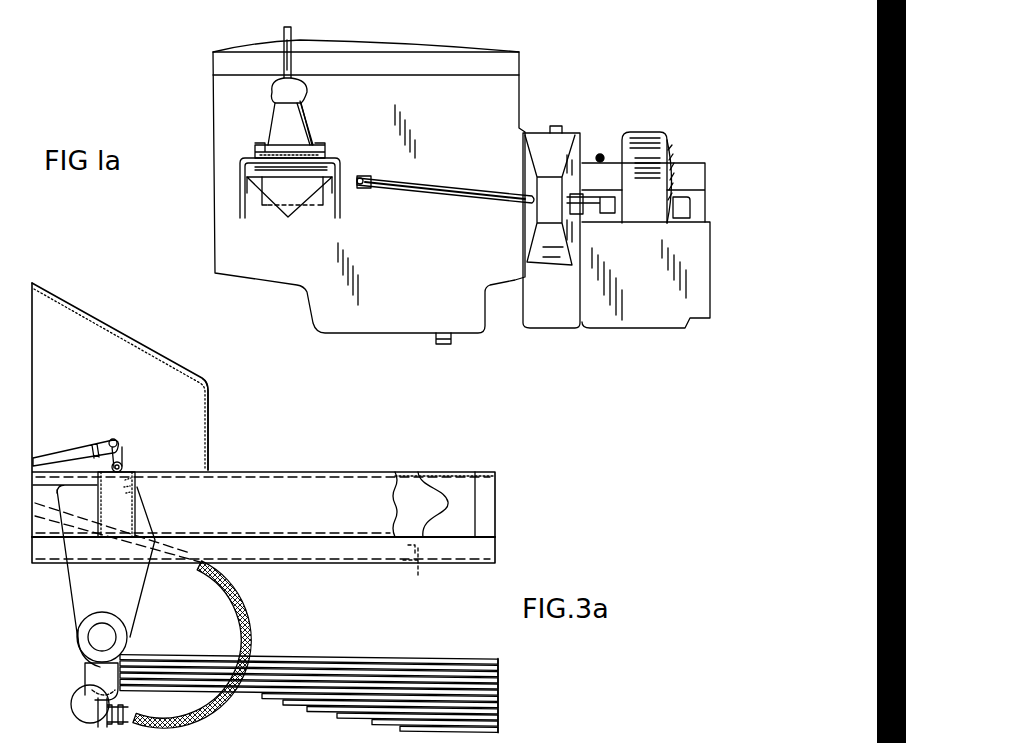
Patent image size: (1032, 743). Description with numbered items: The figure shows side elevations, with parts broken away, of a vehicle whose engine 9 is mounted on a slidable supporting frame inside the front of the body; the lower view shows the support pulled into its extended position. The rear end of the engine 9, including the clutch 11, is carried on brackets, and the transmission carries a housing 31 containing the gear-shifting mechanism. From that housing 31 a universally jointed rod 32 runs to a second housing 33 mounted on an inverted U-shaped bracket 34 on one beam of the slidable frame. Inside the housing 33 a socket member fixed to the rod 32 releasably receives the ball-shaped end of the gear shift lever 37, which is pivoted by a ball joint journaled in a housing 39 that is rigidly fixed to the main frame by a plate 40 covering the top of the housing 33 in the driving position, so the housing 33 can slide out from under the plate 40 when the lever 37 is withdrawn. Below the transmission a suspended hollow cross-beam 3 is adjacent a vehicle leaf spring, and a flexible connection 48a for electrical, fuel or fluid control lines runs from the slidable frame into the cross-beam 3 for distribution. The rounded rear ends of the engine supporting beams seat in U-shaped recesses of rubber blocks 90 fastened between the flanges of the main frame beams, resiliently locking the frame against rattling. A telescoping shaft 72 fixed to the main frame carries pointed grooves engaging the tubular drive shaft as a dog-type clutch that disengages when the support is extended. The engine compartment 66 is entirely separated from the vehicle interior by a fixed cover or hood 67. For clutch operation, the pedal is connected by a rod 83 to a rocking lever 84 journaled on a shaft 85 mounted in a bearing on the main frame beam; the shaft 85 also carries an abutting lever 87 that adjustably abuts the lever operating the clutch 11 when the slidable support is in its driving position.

In FIG. 1A, the engine 9 is at (450, 54).
In FIG. 1A, the gear shift lever 37 is at (292, 33).
In FIG. 1A, the housing 39 is at (272, 120).
In FIG. 1A, the plate 40 is at (307, 128).
In FIG. 1A, the inverted U-shaped bracket 34 is at (340, 161).
In FIG. 1A, the housing 33 is at (252, 215).
In FIG. 1A, the universally jointed rod 32 is at (474, 190).
In FIG. 1A, the clutch 11 is at (578, 130).
In FIG. 1A, the shaft 85 is at (600, 154).
In FIG. 3A, the shaft 85 is at (123, 466).
In FIG. 1A, the housing 31 is at (670, 141).
In FIG. 3A, the fixed cover or hood 67 is at (118, 333).
In FIG. 3A, the compartment 66 is at (188, 380).
In FIG. 3A, the rod 83 is at (72, 453).
In FIG. 3A, the rocking lever 84 is at (121, 446).
In FIG. 3A, the abutting lever 87 is at (136, 482).
In FIG. 3A, the rubber blocks 90 is at (441, 473).
In FIG. 3A, the telescoping shaft 72 is at (423, 570).
In FIG. 3A, the flexible connection 48a is at (243, 625).
In FIG. 3A, the cross-beam 3 is at (92, 684).